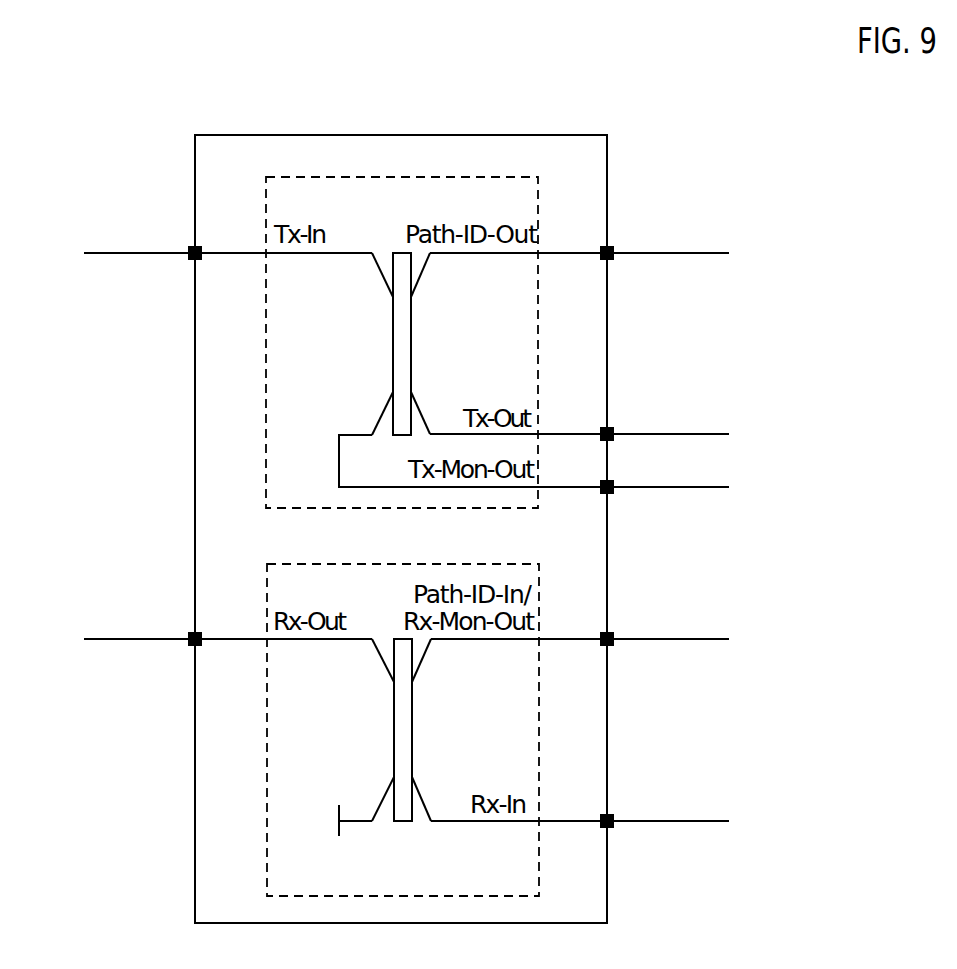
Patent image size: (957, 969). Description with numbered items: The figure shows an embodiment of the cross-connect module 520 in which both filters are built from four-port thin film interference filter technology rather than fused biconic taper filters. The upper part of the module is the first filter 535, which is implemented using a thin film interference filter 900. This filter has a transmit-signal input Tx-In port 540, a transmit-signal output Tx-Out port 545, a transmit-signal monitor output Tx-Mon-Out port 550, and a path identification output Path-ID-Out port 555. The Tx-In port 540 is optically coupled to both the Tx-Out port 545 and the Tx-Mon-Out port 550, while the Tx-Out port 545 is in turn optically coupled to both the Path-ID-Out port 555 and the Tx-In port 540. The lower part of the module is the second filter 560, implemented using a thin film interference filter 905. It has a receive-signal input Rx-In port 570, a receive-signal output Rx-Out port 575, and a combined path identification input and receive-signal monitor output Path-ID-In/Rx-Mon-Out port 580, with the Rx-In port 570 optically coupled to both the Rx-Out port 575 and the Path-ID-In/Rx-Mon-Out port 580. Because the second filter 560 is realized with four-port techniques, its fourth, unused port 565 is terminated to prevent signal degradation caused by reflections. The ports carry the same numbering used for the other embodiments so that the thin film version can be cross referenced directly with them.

The first cross-connect module 520 is at (598, 135).
The first filter 535 is at (402, 327).
The transmit-signal input (Tx-In) port 540 is at (139, 235).
The transmit-signal output (Tx-Out) port 545 is at (668, 417).
The transmit-signal monitor output (Tx-Mon-Out) port 550 is at (668, 470).
The path identification output (Path-ID-Out) port 555 is at (668, 235).
The second filter 560 is at (403, 714).
The fourth, unused port 565 is at (327, 820).
The receive-signal input (Rx-In) port 570 is at (668, 805).
The receive-signal output (Rx-Out) port 575 is at (139, 621).
The path identification input/receive-signal monitor output (Path-ID-In/Rx-Mon-Out) 580 is at (668, 621).
The thin film interference filter 900 is at (371, 344).
The thin film interference filter 905 is at (373, 730).